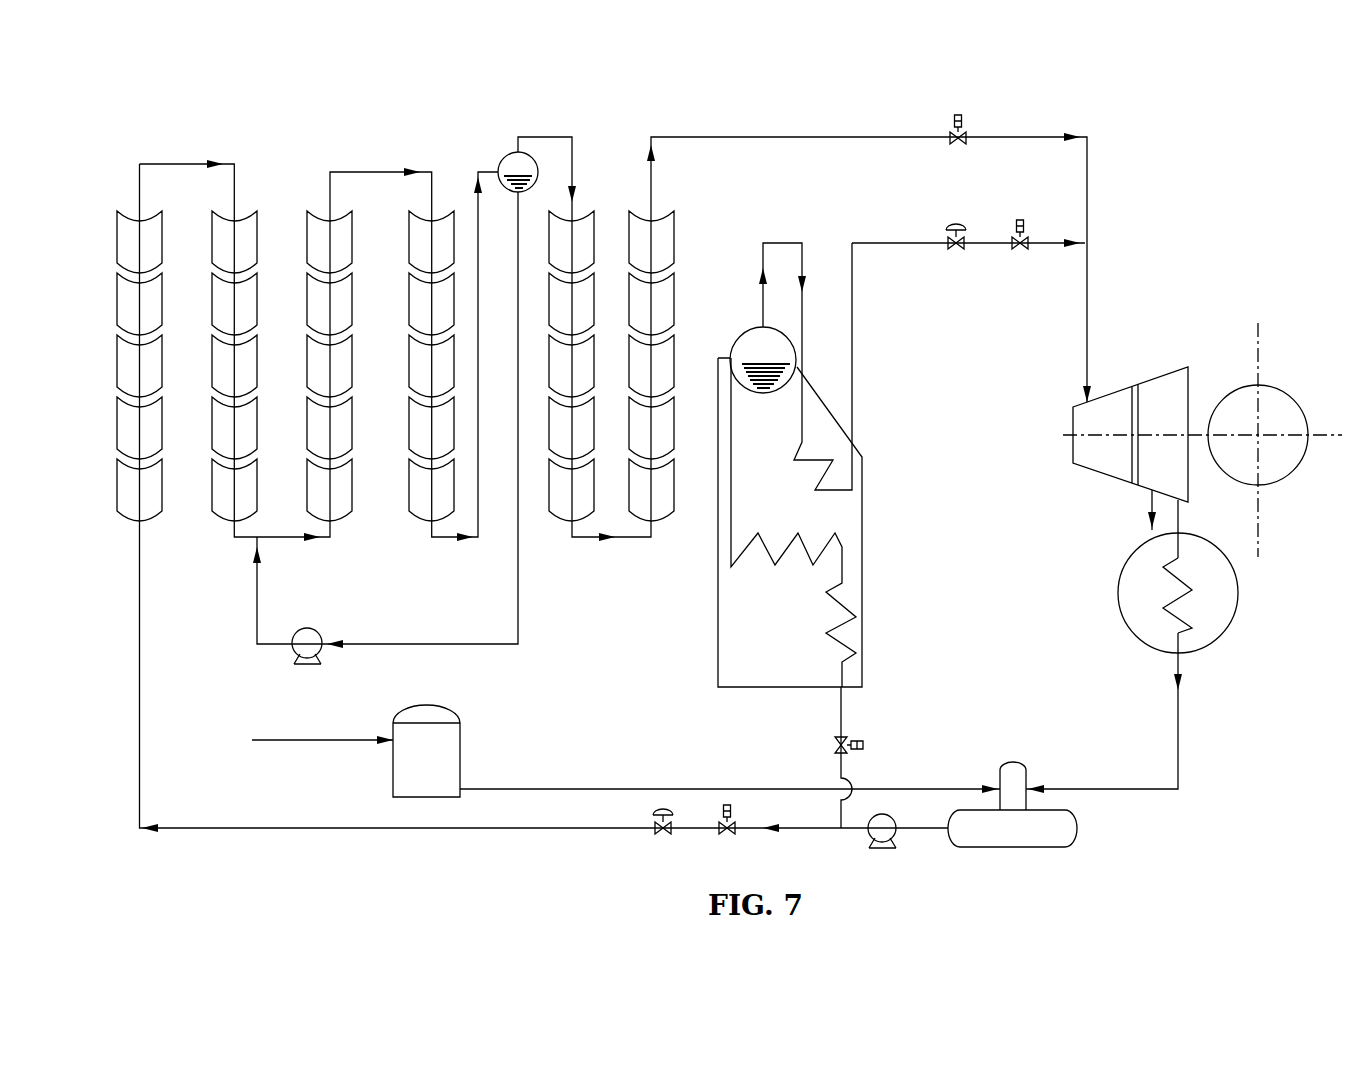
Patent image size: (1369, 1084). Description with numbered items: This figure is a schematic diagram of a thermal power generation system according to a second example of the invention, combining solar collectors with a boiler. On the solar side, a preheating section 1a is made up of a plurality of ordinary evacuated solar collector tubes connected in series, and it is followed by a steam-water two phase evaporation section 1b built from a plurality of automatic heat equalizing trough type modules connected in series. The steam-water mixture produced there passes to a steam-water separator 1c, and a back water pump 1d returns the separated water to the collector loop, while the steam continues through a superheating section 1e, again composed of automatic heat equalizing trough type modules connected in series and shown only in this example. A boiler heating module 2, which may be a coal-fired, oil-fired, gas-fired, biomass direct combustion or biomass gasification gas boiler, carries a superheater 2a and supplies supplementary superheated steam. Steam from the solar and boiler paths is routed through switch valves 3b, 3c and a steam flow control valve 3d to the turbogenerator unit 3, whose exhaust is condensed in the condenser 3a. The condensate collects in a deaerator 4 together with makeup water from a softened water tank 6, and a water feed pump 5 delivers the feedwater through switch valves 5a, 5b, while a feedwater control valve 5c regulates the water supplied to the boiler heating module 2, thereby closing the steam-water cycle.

The preheating section 1a is at (162, 480).
The steam-water two phase evaporation section 1b is at (396, 510).
The steam-water separator 1c is at (505, 161).
The back water pump 1d is at (310, 633).
The superheating section 1e is at (655, 228).
The boiler heating module 2 is at (717, 661).
The superheater 2a is at (832, 492).
The turbogenerator unit 3 is at (1103, 413).
The condenser 3a is at (1145, 582).
The switch valve 3b is at (1023, 248).
The switch valve 3c is at (961, 143).
The steam flow control valve 3d is at (959, 248).
The deaerator 4 is at (1007, 783).
The water feed pump 5 is at (871, 834).
The switch valve 5a is at (730, 833).
The switch valve 5b is at (666, 833).
The feedwater control valve 5c is at (863, 748).
The softened water tank 6 is at (453, 767).